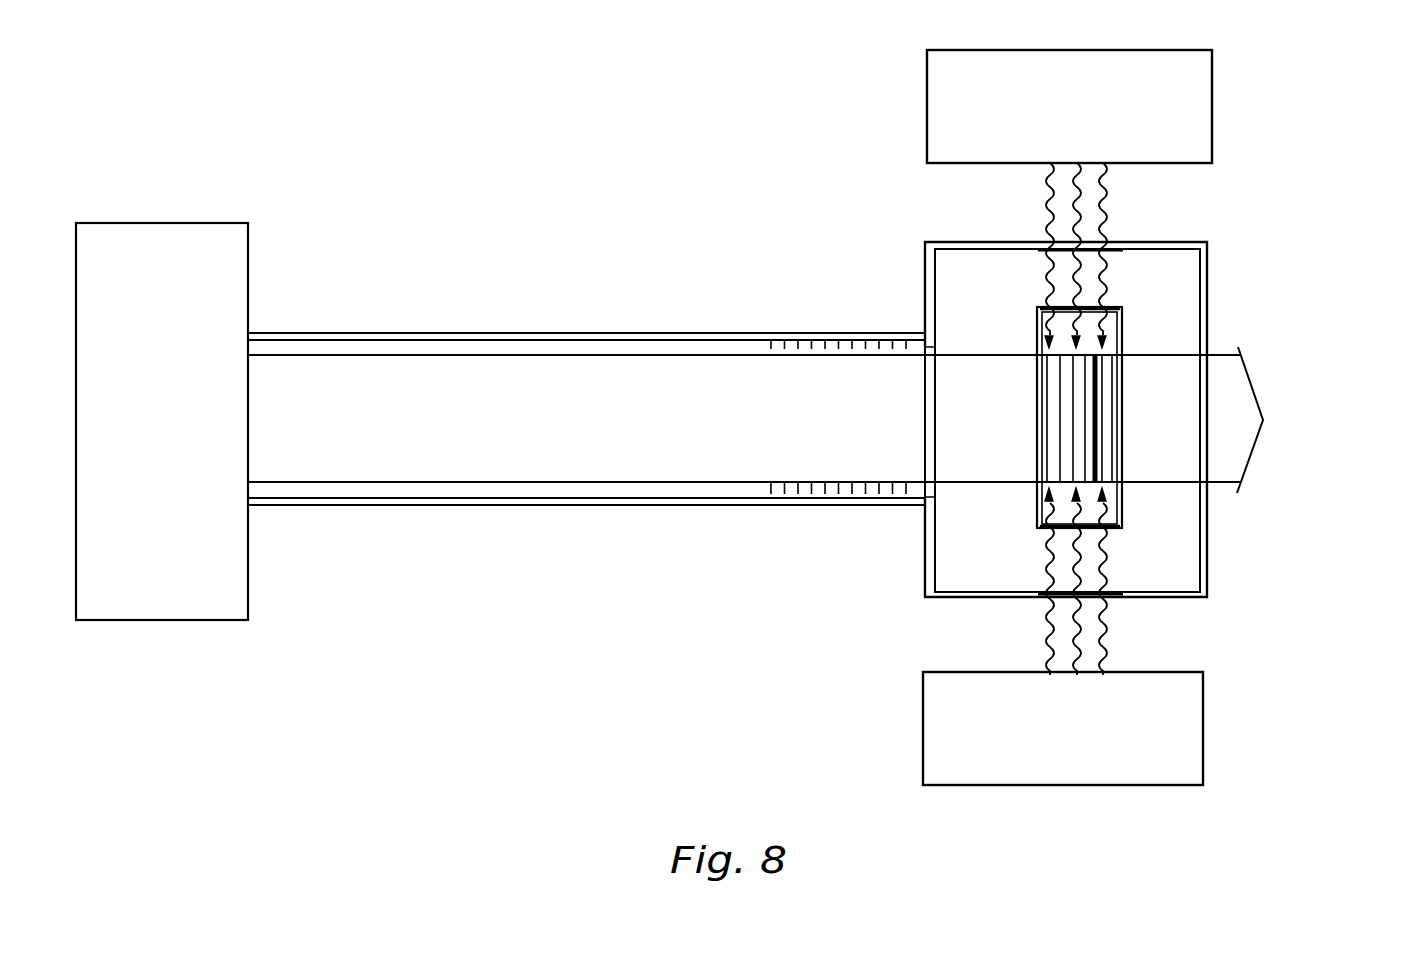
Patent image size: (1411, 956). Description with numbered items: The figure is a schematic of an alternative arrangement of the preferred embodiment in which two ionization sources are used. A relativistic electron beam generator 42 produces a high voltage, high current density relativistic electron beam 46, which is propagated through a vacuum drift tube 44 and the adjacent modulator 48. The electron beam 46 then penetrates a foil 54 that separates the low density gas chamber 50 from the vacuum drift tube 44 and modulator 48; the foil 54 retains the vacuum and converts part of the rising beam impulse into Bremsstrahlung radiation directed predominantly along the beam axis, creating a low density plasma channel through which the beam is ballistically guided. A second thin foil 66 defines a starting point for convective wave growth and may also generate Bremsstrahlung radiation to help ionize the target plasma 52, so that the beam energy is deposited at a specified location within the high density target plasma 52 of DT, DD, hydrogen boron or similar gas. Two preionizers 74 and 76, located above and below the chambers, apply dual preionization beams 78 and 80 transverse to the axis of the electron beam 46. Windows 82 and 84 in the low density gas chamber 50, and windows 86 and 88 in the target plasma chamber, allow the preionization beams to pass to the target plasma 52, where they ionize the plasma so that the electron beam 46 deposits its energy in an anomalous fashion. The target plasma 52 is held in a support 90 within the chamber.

The relativistic electron beam generator 42 is at (140, 587).
The vacuum drift tube 44 is at (437, 502).
The electron beam 46 is at (550, 448).
The modulator 48 is at (810, 497).
The low density gas chamber 50 is at (965, 563).
The target plasma 52 is at (1100, 413).
The foil 54 is at (925, 400).
The foil 66 is at (1035, 330).
The preionizer 74 is at (1167, 112).
The preionizer 76 is at (1163, 728).
The preionization beam 78 is at (1108, 658).
The preionization beam 80 is at (1105, 183).
The window 82 is at (1117, 241).
The window 84 is at (1108, 597).
The window 86 is at (1115, 305).
The window 88 is at (1113, 530).
The support 90 is at (1125, 498).